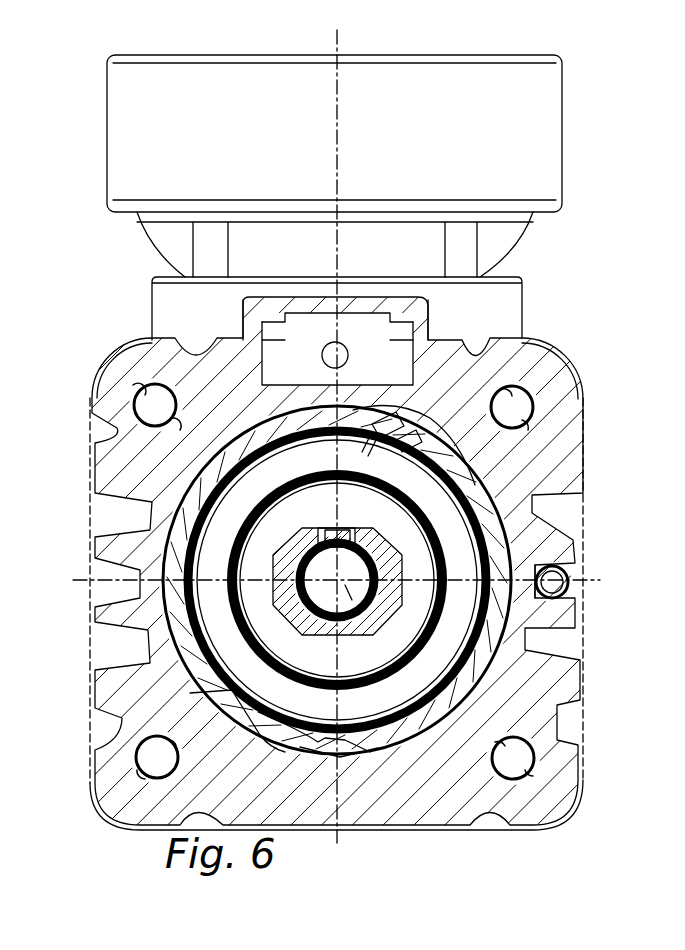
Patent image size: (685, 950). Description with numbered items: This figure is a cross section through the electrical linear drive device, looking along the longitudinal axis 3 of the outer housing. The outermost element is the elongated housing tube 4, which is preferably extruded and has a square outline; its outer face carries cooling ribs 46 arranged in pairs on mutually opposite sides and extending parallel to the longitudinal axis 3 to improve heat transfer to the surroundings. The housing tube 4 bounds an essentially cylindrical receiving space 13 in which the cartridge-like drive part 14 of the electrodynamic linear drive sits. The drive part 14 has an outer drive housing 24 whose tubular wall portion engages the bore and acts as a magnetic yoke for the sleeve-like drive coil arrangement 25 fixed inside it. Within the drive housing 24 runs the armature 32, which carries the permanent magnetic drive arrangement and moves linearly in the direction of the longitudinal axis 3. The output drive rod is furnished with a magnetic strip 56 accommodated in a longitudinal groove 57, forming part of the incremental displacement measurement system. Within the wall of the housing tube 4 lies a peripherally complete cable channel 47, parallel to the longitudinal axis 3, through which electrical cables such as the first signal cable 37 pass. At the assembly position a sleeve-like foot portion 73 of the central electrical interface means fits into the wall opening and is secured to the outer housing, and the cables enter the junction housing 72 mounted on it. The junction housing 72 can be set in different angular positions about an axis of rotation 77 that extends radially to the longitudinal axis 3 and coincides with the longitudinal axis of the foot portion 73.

The longitudinal axis 3 is at (358, 616).
The housing tube 4 is at (545, 808).
The receiving space 13 is at (383, 745).
The drive part 14 is at (490, 672).
The drive housing 24 is at (173, 593).
The drive coil arrangement 25 is at (232, 638).
The armature 32 is at (150, 95).
The first electrical signal cable 37 is at (348, 347).
The cooling ribs 46 is at (95, 540).
The cable channel 47 is at (292, 322).
The magnetic strip 56 is at (327, 530).
The longitudinal groove 57 is at (353, 530).
The junction housing 72 is at (560, 117).
The foot portion 73 is at (172, 305).
The axis of rotation 77 is at (340, 126).